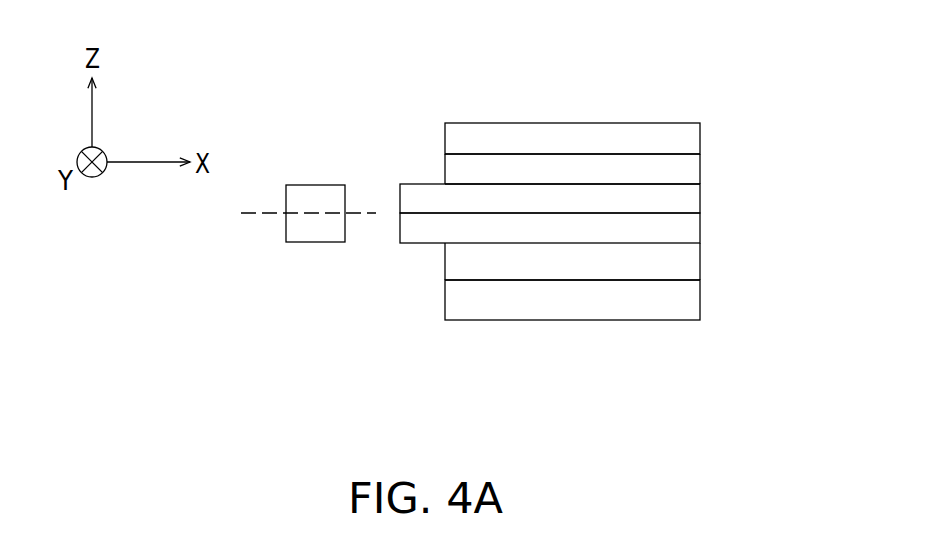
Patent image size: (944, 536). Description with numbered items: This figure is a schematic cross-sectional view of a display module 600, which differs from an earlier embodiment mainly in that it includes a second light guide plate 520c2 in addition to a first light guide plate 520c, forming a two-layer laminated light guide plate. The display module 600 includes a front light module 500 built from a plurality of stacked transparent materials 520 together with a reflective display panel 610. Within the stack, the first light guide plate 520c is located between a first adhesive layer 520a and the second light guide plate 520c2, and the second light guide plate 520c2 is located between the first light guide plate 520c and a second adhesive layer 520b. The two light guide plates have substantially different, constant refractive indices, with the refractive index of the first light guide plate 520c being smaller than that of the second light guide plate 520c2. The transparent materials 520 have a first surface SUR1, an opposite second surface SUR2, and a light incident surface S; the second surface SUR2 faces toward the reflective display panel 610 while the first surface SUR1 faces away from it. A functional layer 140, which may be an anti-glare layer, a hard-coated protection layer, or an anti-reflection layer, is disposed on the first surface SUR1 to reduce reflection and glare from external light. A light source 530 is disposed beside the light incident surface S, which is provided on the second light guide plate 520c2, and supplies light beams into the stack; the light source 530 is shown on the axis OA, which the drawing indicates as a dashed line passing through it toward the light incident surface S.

The functional layer 140 is at (668, 138).
The first surface SUR1 is at (676, 153).
The transparent materials 520 is at (620, 215).
The first adhesive layer 520a is at (692, 168).
The first light guide plate 520c is at (692, 201).
The second light guide plate 520c2 is at (692, 233).
The second adhesive layer 520b is at (692, 265).
The second surface SUR2 is at (661, 282).
The reflective display panel 610 is at (597, 307).
The display module 600 is at (620, 235).
The front light module 500 is at (385, 137).
The light source 530 is at (310, 235).
The light incident surface S is at (399, 218).
The optical axis OA is at (292, 214).